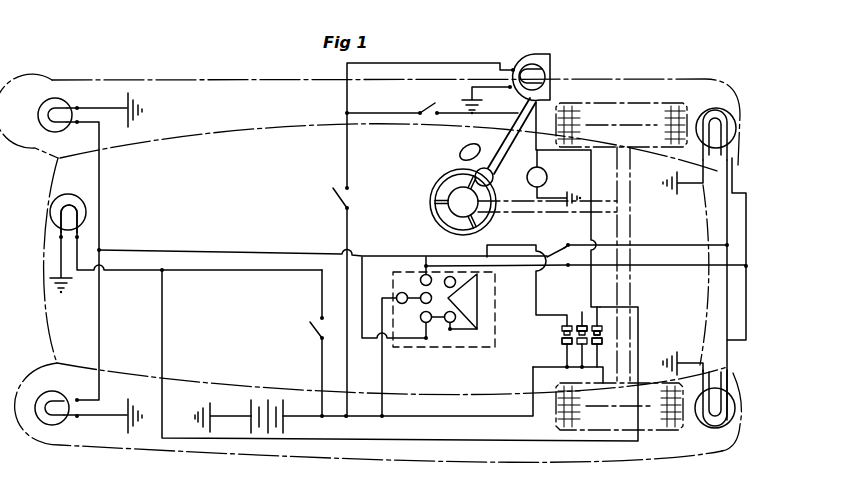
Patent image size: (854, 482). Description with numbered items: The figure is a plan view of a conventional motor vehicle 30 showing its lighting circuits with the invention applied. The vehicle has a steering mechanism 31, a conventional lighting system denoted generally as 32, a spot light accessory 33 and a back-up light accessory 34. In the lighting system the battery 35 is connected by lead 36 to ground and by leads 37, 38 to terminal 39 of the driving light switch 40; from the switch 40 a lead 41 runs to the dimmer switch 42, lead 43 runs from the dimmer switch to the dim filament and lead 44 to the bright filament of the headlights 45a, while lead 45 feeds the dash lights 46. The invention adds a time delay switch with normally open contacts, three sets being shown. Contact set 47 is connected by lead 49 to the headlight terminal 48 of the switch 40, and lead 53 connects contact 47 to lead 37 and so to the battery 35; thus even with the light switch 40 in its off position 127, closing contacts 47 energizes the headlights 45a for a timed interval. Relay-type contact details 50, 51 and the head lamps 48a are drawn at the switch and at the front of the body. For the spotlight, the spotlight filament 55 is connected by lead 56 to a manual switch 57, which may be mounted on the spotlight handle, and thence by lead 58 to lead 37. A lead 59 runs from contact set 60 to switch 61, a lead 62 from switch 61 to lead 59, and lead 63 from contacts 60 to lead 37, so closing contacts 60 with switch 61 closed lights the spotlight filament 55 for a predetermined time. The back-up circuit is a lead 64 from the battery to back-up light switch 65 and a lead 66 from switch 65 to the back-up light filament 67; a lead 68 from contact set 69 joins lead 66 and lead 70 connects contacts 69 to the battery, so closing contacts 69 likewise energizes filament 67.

The motor vehicle 30 is at (432, 460).
The steering mechanism 31 is at (440, 175).
The lighting system 32 is at (653, 268).
The spot light accessory 33 is at (548, 53).
The back-up light accessory 34 is at (52, 202).
The battery 35 is at (283, 427).
The lead 36 is at (238, 418).
The lead 37 is at (413, 419).
The lead 38 is at (384, 380).
The terminal 39 is at (397, 297).
The driving light switch 40 is at (412, 277).
The lead 41 is at (549, 256).
The dimmer switch 42 is at (568, 244).
The lead 43 is at (670, 245).
The lead 44 is at (670, 266).
The lead 45 is at (521, 244).
The headlights 45a is at (735, 120).
The dash lights 46 is at (548, 174).
The contact set 47 is at (561, 328).
The headlight terminal 48 is at (444, 309).
The head lamps 48a is at (50, 80).
The lead 49 is at (505, 268).
The relay contact conductor 50 is at (426, 339).
The relay contact 51 is at (448, 331).
The lead 53 is at (562, 351).
The spotlight filament 55 is at (544, 74).
The lead 56 is at (424, 63).
The manual switch 57 is at (332, 203).
The lead 58 is at (346, 234).
The lead 59 is at (512, 111).
The contact set 60 is at (581, 320).
The switch 61 is at (435, 107).
The lead 62 is at (376, 100).
The lead 63 is at (572, 374).
The lead 64 is at (322, 362).
The back-up light switch 65 is at (313, 327).
The lead 66 is at (207, 272).
The back-up light filament 67 is at (62, 207).
The lead 68 is at (553, 441).
The contact set 69 is at (577, 375).
The lead 70 is at (577, 367).
The off position 127 is at (473, 337).